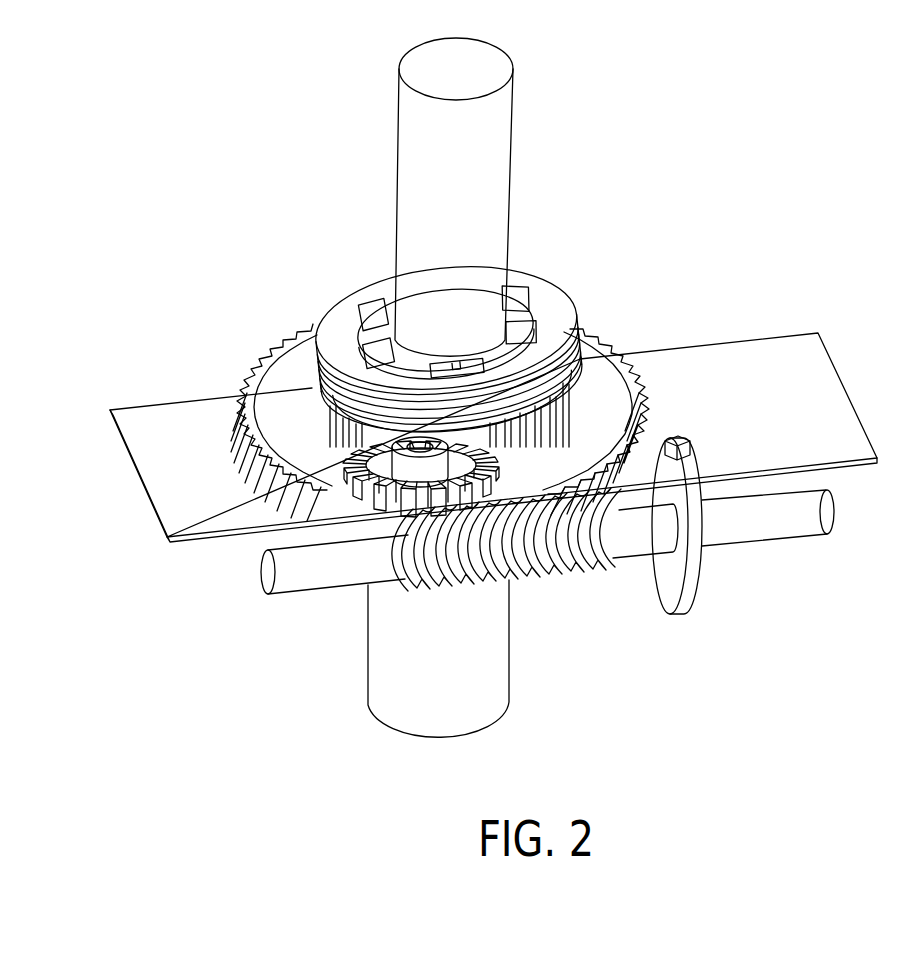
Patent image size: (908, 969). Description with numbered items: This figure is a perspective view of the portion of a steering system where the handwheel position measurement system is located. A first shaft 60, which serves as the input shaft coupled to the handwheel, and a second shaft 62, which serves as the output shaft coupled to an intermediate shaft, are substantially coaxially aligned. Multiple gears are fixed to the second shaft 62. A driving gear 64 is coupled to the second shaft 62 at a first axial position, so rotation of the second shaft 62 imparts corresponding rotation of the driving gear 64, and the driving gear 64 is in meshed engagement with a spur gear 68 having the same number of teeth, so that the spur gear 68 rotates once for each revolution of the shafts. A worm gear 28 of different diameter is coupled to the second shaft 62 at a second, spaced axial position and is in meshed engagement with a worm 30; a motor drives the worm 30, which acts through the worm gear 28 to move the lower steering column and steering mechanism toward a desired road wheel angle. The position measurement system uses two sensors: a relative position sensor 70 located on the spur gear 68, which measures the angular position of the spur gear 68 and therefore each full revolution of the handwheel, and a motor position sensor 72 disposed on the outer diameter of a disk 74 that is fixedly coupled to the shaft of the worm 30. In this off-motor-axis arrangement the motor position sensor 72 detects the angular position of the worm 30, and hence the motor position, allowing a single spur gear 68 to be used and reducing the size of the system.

The worm gear 28 is at (292, 517).
The worm 30 is at (793, 507).
The first shaft 60 is at (483, 157).
The second shaft 62 is at (493, 685).
The driving gear 64 is at (362, 430).
The spur gear 68 is at (252, 446).
The relative position sensor 70 is at (418, 444).
The motor position sensor 72 is at (682, 441).
The disk 74 is at (697, 598).